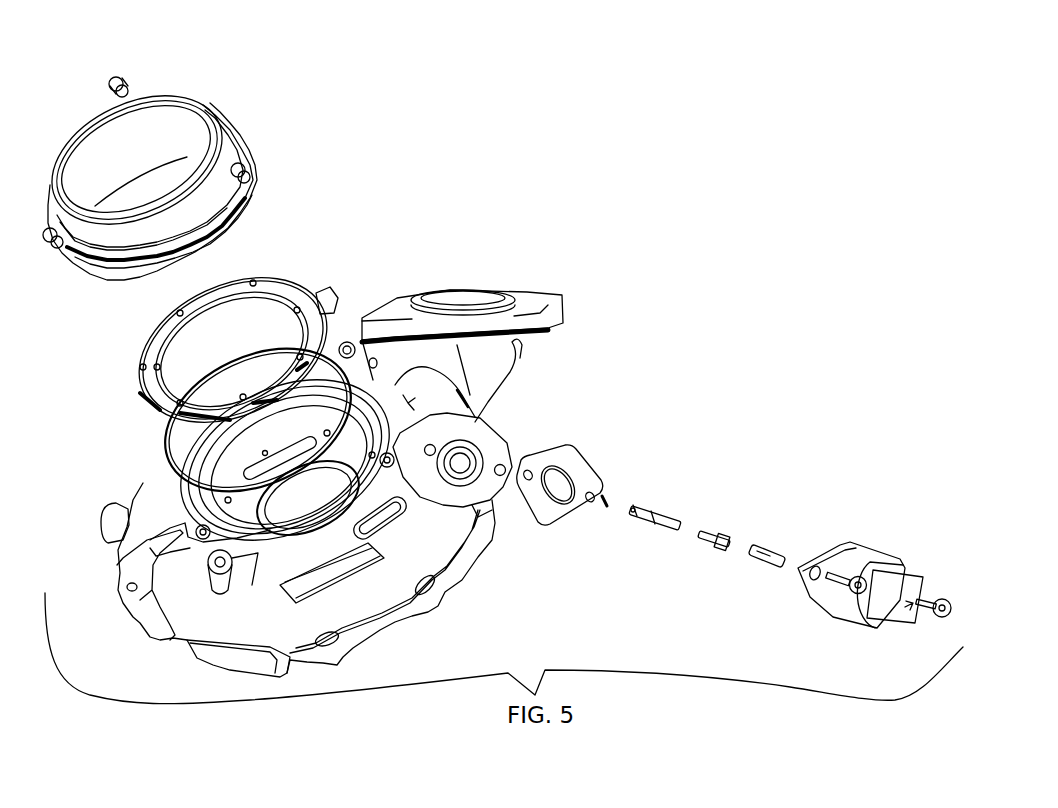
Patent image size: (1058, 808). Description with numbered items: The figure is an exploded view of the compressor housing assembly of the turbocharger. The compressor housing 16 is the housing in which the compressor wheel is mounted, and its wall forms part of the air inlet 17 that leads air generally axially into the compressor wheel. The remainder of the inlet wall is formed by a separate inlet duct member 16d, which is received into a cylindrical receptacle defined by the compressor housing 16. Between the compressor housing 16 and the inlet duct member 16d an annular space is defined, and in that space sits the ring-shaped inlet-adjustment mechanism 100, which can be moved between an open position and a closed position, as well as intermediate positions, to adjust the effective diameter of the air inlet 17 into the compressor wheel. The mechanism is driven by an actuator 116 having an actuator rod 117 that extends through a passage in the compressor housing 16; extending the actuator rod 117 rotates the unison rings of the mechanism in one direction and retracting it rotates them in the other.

The compressor housing 16 is at (152, 500).
The inlet duct member 16d is at (177, 98).
The air inlet 17 is at (140, 183).
The inlet-adjustment mechanism 100 is at (305, 283).
The actuator 116 is at (950, 580).
The actuator rod 117 is at (651, 521).